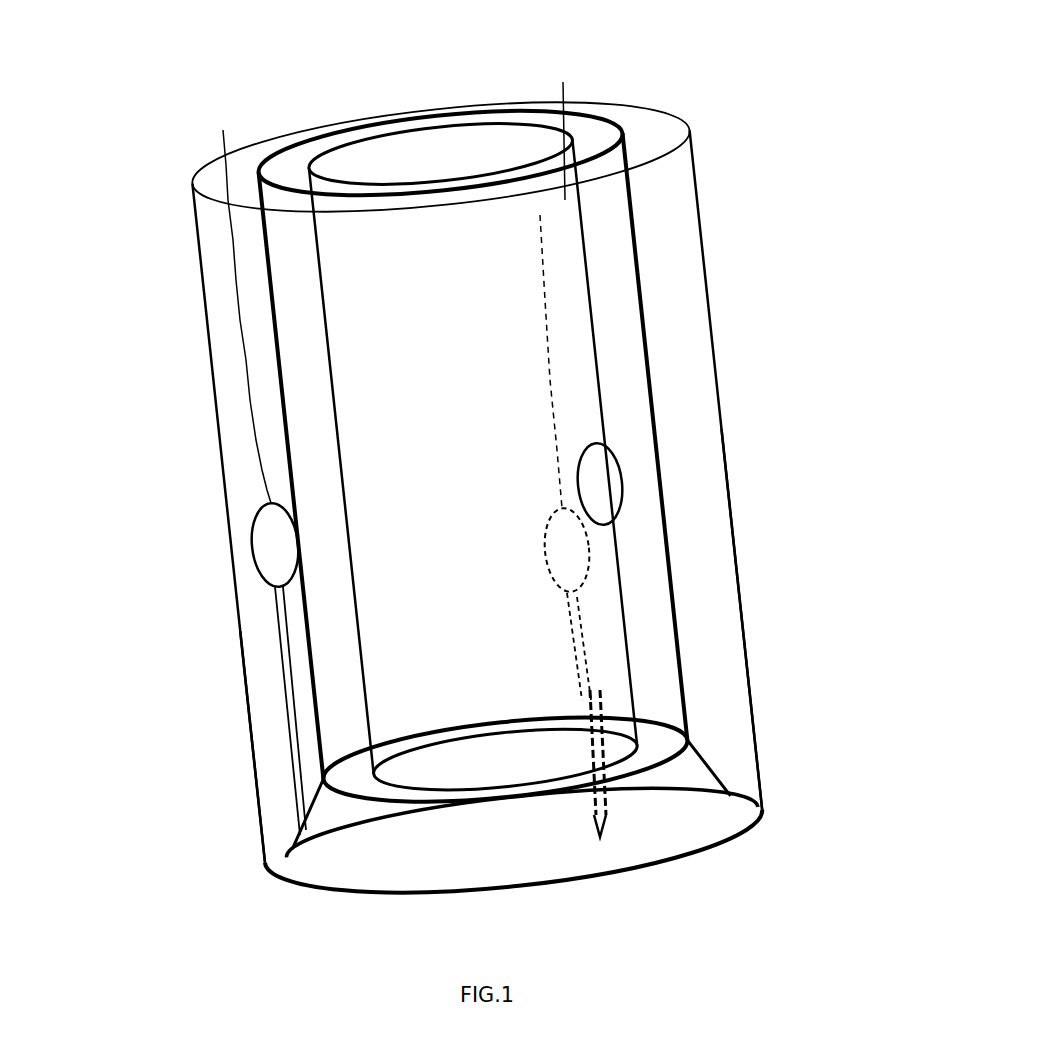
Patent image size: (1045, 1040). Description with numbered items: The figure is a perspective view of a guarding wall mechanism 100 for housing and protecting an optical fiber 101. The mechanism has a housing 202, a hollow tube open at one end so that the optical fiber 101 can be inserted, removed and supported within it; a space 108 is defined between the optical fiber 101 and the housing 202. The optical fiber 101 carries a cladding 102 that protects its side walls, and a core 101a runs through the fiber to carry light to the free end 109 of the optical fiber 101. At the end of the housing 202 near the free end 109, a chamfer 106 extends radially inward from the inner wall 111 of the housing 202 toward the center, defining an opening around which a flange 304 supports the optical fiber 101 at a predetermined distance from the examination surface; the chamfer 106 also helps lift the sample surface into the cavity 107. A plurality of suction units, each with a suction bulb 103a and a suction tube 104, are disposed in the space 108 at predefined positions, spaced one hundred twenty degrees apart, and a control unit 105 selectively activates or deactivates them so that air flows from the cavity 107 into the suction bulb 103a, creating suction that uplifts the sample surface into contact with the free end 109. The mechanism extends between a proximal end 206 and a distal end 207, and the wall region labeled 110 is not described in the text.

The guarding wall mechanism 100 is at (484, 498).
The optical fiber 101 is at (302, 160).
The core of the optical fiber 101a is at (547, 142).
The cladding 102 is at (282, 171).
The housing 202 is at (708, 328).
The control unit 105 is at (252, 343).
The distal end 207 is at (610, 527).
The sleeve side wall 110 is at (733, 563).
The suction bulb 103a is at (262, 561).
The suction tube 104 is at (577, 642).
The space 108 is at (244, 653).
The chamfer 106 is at (714, 768).
The flange portion 304 is at (345, 776).
The cavity 107 is at (390, 855).
The inner wall 111 is at (745, 780).
The free end of the optical fiber 109 is at (429, 775).
The proximal end 206 is at (567, 823).